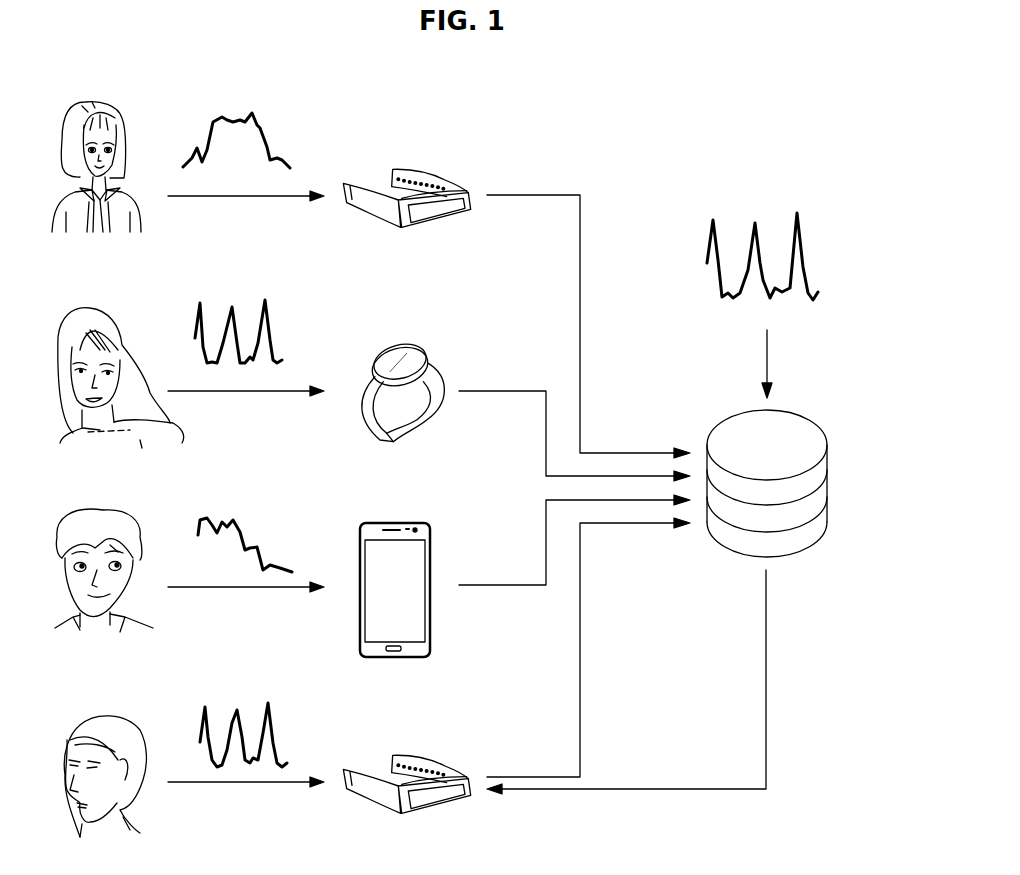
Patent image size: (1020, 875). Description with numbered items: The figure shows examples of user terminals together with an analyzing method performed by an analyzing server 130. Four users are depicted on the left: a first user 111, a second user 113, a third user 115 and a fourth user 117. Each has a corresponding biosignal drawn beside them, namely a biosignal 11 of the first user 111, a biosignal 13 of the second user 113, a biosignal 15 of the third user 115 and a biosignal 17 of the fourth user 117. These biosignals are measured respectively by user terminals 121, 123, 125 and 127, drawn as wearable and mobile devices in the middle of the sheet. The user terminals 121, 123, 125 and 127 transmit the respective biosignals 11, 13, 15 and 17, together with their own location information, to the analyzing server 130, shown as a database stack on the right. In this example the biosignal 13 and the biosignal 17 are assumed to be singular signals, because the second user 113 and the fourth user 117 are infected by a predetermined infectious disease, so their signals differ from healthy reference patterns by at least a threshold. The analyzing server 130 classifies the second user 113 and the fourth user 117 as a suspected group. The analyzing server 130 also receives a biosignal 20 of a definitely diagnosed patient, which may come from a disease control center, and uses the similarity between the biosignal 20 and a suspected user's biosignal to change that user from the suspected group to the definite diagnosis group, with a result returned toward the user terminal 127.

The first user 111 is at (105, 98).
The biosignal 11 is at (262, 110).
The user terminal 121 is at (437, 173).
The second user 113 is at (105, 308).
The biosignal 13 is at (252, 303).
The user terminal 123 is at (438, 360).
The third user 115 is at (107, 510).
The biosignal 15 is at (253, 532).
The user terminal 125 is at (415, 523).
The fourth user 117 is at (107, 712).
The biosignal 17 is at (252, 707).
The user terminal 127 is at (437, 762).
The biosignal of a definitely diagnosed patient 20 is at (795, 208).
The analyzing server 130 is at (803, 408).